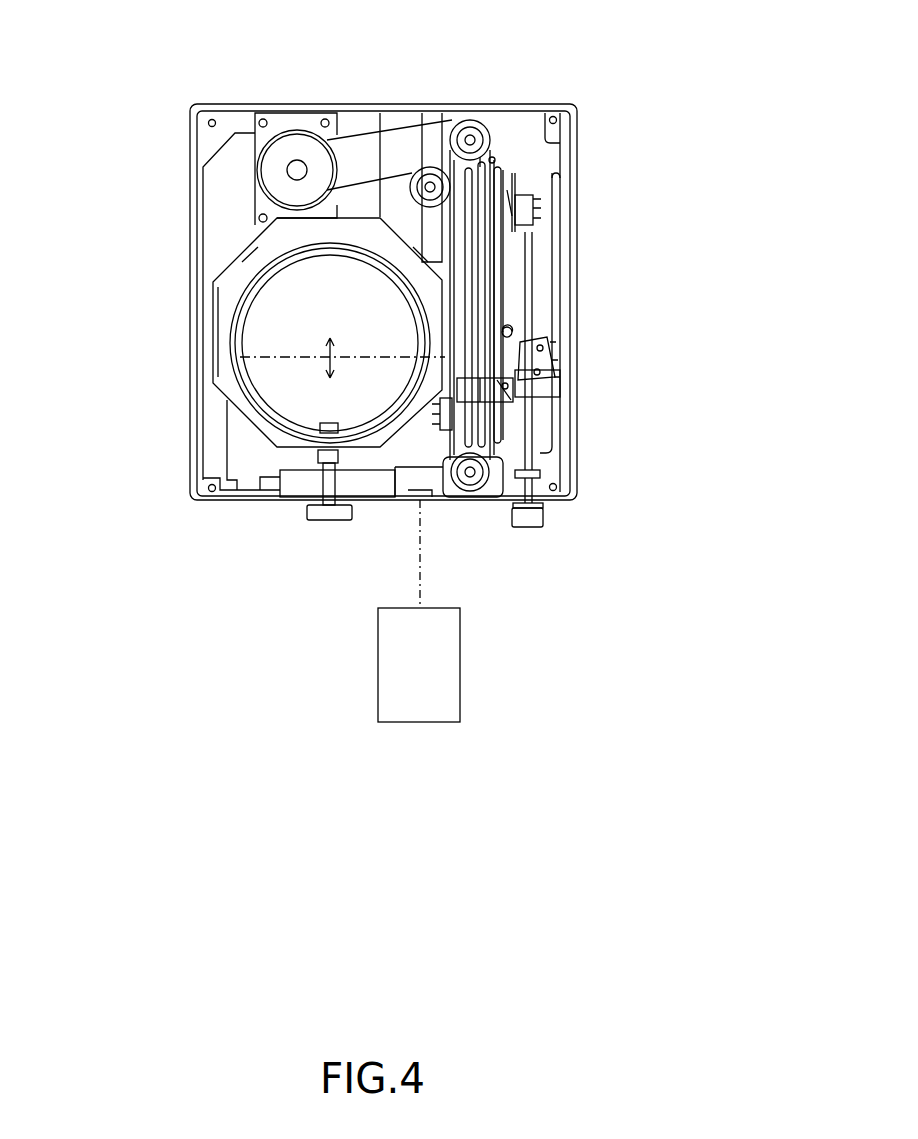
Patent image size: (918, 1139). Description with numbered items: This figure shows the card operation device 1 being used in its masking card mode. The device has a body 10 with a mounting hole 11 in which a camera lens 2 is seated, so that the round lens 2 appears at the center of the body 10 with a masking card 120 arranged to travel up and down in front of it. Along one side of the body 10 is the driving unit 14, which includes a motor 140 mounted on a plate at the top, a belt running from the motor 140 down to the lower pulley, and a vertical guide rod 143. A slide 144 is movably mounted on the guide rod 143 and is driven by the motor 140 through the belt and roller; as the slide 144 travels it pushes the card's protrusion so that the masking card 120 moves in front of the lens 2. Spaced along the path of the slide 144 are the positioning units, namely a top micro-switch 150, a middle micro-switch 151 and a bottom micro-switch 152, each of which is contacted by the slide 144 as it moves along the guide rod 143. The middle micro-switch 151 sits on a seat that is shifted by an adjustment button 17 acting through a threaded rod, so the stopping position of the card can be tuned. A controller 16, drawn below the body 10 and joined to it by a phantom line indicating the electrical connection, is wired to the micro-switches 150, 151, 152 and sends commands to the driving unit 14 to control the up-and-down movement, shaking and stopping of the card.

The card operation device 1 is at (180, 158).
The body 10 is at (190, 112).
The camera lens 2 is at (237, 312).
The mounting hole 11 is at (237, 355).
The masking card 120 is at (298, 360).
The motor 140 is at (277, 152).
The driving unit 14 is at (477, 117).
The guide rod 143 is at (500, 300).
The top micro-switch 150 is at (515, 195).
The middle micro-switch 151 is at (522, 338).
The slide 144 is at (500, 393).
The bottom micro-switch 152 is at (452, 460).
The adjustment button 17 is at (537, 527).
The controller 16 is at (460, 665).